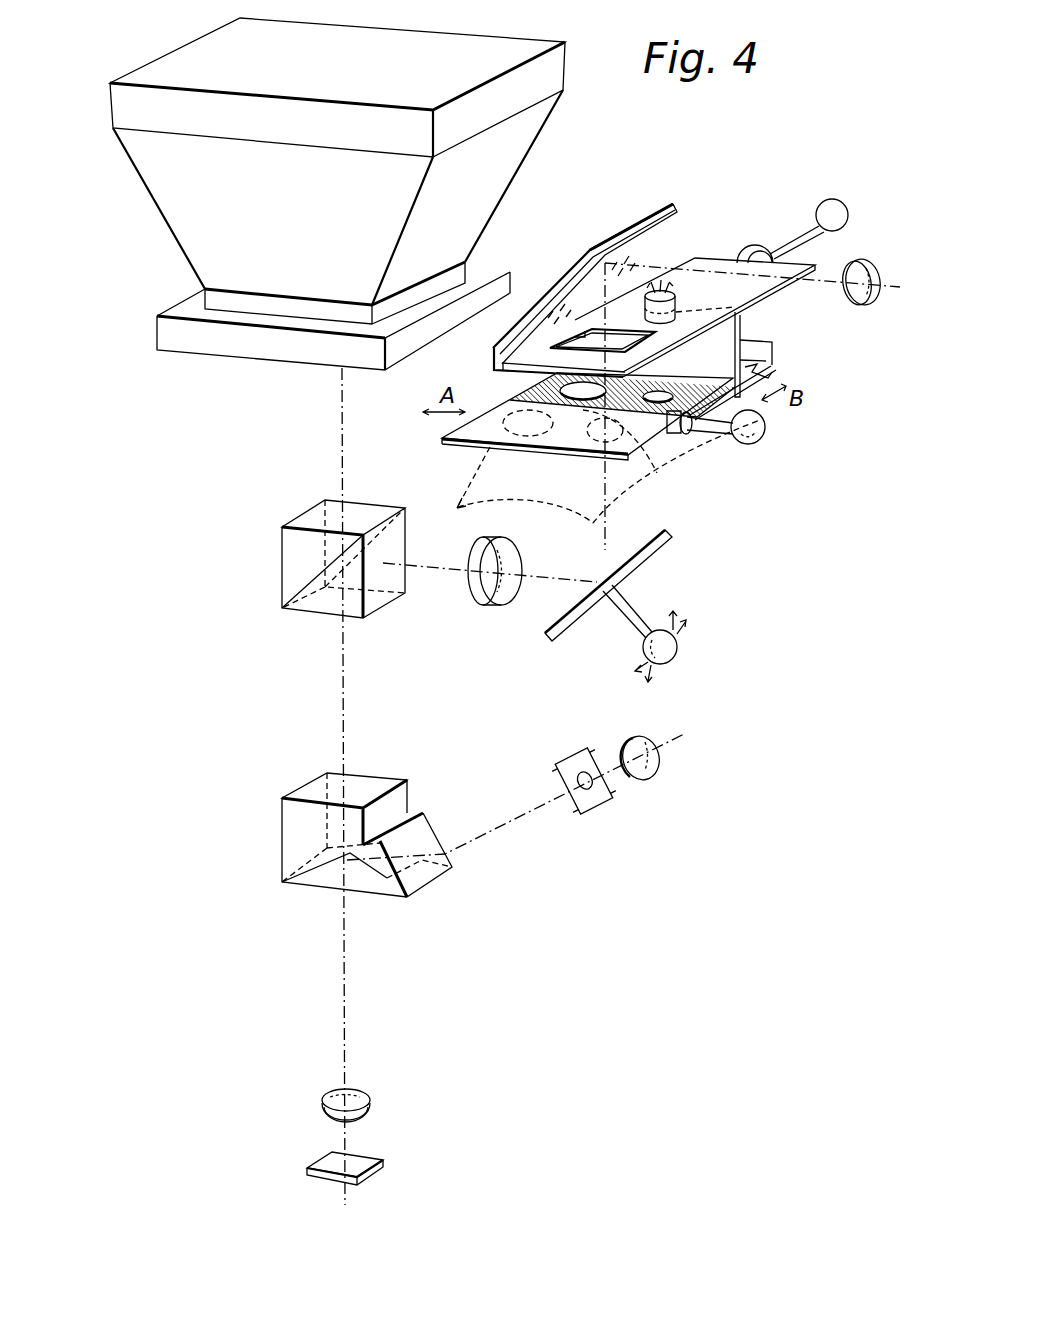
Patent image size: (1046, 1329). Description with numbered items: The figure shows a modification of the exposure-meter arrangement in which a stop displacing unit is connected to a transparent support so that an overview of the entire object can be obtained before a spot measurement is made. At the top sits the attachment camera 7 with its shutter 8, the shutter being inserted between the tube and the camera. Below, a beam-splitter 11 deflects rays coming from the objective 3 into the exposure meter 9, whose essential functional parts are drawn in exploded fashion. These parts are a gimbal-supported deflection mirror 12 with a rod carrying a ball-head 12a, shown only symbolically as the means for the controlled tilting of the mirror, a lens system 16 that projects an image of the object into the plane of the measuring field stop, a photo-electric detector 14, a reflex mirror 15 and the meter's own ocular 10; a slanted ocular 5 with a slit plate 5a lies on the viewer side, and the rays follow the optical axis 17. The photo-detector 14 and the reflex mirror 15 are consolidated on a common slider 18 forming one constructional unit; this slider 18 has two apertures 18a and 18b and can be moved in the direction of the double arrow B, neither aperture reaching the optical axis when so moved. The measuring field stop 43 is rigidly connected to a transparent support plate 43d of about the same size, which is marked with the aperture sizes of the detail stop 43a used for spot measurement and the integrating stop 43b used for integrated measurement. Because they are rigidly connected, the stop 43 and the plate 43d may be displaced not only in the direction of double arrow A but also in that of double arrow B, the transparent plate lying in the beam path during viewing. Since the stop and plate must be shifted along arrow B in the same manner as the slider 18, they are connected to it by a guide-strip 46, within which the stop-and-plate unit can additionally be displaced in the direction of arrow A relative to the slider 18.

The objective 3 is at (368, 1100).
The slanted ocular 5 is at (643, 780).
The slit plate 5a is at (590, 805).
The attachment camera 7 is at (480, 108).
The shutter 8 is at (273, 345).
The exposure meter 9 is at (727, 500).
The ocular 10 is at (864, 304).
The beam-splitter 11 is at (298, 565).
The deflection mirror 12 is at (580, 620).
The rod with ball-head 12a is at (667, 661).
The photo-electric detector 14 is at (660, 292).
The reflex mirror 15 is at (583, 275).
The lens system 16 is at (495, 598).
The optical axis 17 is at (606, 550).
The slider 18 is at (702, 276).
The aperture 18a is at (494, 371).
The aperture 18b is at (747, 309).
The measuring field stop 43 is at (460, 428).
The detail stop 43a is at (671, 466).
The integrating stop 43b is at (490, 448).
The transparent support plate 43d is at (574, 440).
The guide-strip 46 is at (772, 358).